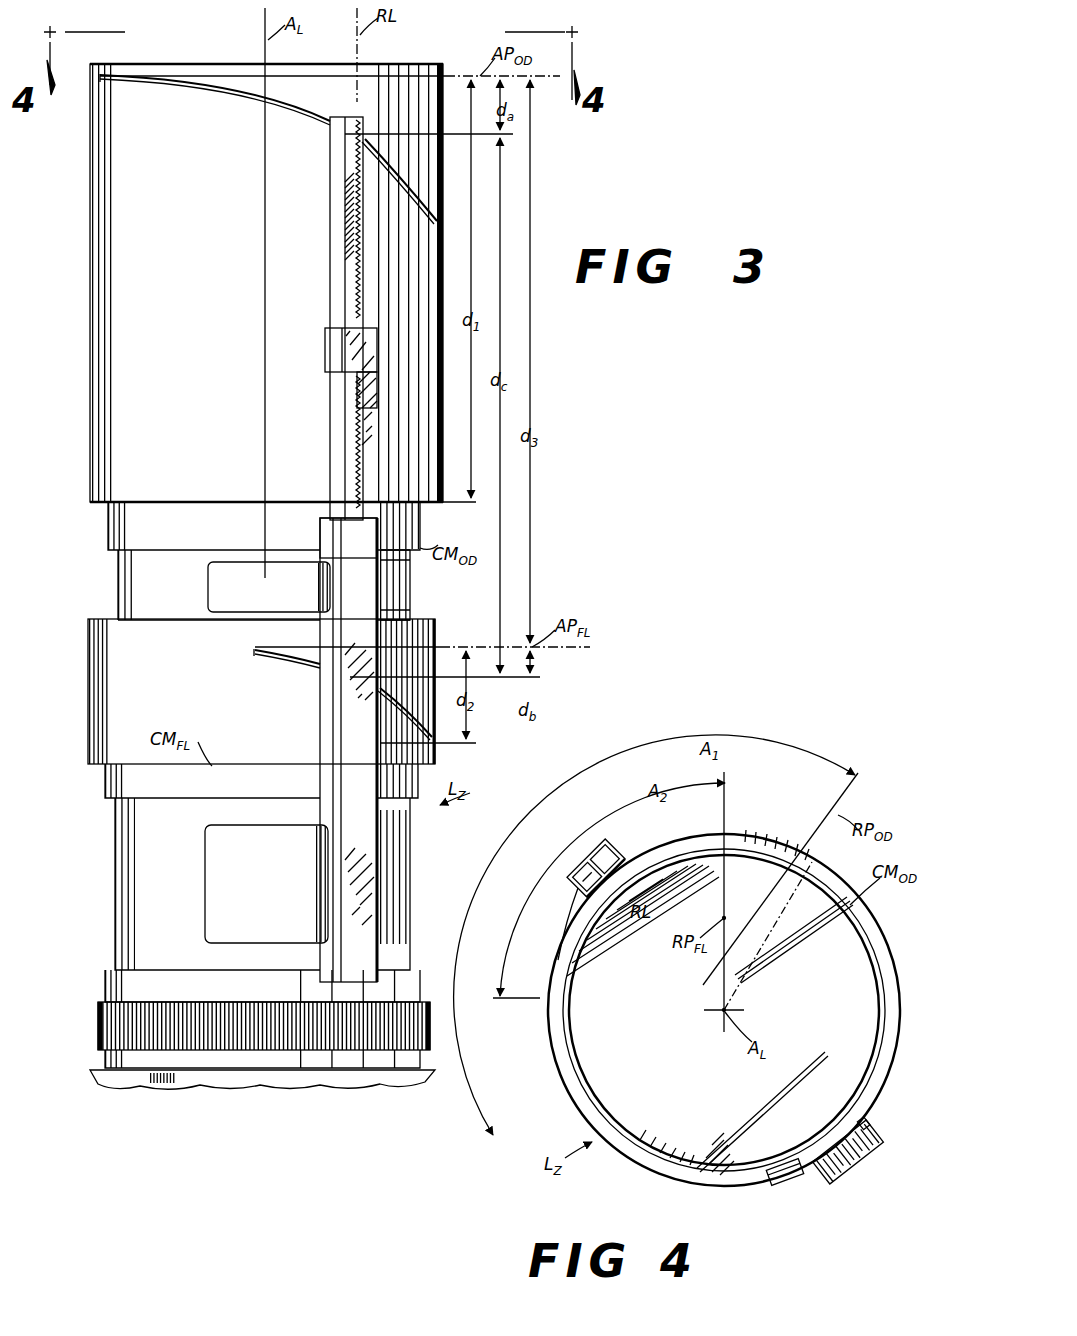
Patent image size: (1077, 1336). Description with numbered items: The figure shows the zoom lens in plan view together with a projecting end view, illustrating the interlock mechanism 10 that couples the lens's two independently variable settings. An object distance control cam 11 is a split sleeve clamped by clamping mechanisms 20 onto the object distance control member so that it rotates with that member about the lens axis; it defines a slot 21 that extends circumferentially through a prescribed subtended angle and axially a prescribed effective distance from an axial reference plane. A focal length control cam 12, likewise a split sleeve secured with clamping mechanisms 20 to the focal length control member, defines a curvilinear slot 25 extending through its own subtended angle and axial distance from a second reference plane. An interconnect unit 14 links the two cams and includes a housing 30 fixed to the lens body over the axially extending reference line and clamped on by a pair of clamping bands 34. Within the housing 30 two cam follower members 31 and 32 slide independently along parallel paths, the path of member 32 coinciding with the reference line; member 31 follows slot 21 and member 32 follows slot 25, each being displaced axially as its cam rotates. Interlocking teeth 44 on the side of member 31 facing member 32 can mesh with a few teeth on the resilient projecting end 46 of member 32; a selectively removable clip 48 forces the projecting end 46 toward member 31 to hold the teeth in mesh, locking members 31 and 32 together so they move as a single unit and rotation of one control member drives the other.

In FIG. 3, the interlock mechanism 10 is at (415, 603).
In FIG. 4, the interlock mechanism 10 is at (606, 878).
In FIG. 3, the object distance control cam 11 is at (103, 505).
In FIG. 4, the object distance control cam 11 is at (882, 930).
In FIG. 3, the focal length control cam 12 is at (108, 615).
In FIG. 3, the interconnect unit 14 is at (320, 540).
In FIG. 4, the interconnect unit 14 is at (596, 868).
In FIG. 4, the clamping mechanism 20 is at (845, 1170).
In FIG. 3, the slot 21 is at (326, 122).
In FIG. 3, the curvilinear slot 25 is at (300, 662).
In FIG. 3, the housing 30 is at (322, 700).
In FIG. 4, the housing 30 is at (587, 876).
In FIG. 3, the cam follower member 31 is at (330, 280).
In FIG. 4, the cam follower member 31 is at (604, 859).
In FIG. 3, the cam follower member 32 is at (353, 420).
In FIG. 4, the cam follower member 32 is at (587, 876).
In FIG. 3, the clamping band 34 is at (262, 760).
In FIG. 3, the interlocking teeth 44 is at (353, 270).
In FIG. 3, the projecting end 46 is at (372, 382).
In FIG. 3, the removable clip 48 is at (368, 344).